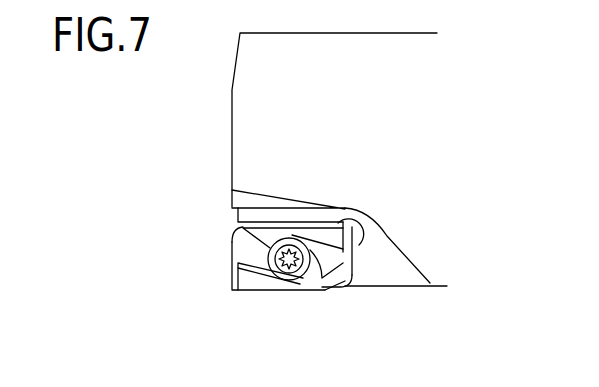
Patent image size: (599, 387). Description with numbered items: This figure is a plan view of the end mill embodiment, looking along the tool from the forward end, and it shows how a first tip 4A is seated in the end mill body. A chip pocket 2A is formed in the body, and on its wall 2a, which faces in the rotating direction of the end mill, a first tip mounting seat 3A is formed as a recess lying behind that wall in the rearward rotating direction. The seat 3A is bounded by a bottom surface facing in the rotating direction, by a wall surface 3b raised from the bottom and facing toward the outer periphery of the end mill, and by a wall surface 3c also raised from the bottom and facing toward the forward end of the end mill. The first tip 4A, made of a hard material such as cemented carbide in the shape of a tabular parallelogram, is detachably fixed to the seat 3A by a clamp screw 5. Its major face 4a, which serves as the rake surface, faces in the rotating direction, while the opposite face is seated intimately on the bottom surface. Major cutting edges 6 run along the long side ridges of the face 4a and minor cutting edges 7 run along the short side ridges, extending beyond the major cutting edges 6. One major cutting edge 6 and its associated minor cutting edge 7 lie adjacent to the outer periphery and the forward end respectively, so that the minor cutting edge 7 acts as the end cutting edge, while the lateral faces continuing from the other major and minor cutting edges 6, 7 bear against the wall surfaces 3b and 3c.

The chip pocket 2A is at (415, 250).
The wall of chip pocket 2a is at (383, 270).
The first tip mounting seat 3A is at (375, 254).
The wall surface 3b is at (305, 212).
The wall surface 3c is at (317, 297).
The major face 4a is at (233, 247).
The first tip 4A is at (238, 296).
The clamp screw 5 is at (293, 293).
The major cutting edge 6 is at (258, 293).
The minor cutting edge 7 is at (230, 288).